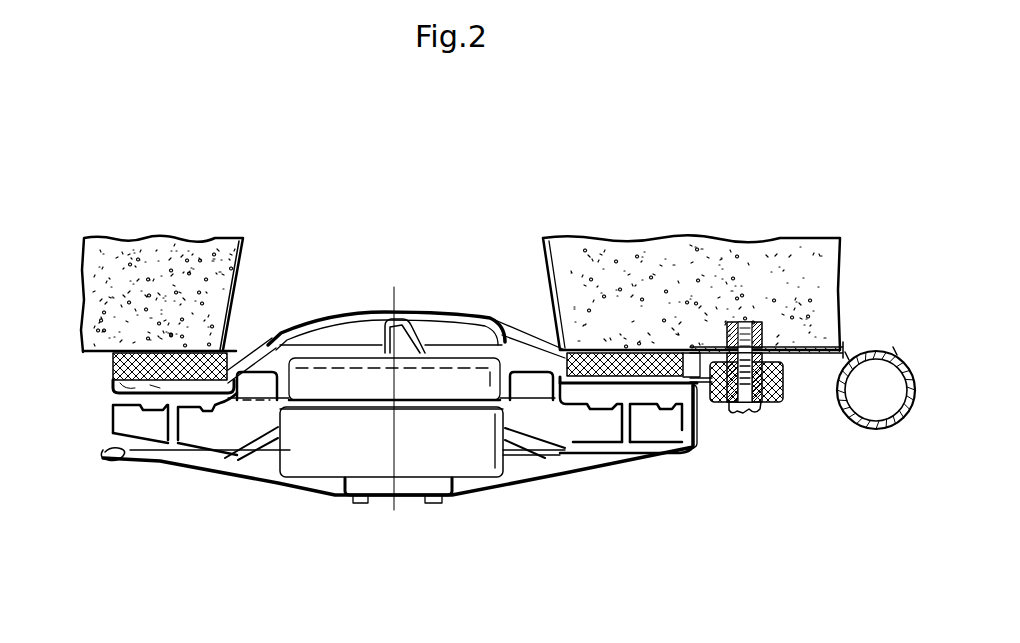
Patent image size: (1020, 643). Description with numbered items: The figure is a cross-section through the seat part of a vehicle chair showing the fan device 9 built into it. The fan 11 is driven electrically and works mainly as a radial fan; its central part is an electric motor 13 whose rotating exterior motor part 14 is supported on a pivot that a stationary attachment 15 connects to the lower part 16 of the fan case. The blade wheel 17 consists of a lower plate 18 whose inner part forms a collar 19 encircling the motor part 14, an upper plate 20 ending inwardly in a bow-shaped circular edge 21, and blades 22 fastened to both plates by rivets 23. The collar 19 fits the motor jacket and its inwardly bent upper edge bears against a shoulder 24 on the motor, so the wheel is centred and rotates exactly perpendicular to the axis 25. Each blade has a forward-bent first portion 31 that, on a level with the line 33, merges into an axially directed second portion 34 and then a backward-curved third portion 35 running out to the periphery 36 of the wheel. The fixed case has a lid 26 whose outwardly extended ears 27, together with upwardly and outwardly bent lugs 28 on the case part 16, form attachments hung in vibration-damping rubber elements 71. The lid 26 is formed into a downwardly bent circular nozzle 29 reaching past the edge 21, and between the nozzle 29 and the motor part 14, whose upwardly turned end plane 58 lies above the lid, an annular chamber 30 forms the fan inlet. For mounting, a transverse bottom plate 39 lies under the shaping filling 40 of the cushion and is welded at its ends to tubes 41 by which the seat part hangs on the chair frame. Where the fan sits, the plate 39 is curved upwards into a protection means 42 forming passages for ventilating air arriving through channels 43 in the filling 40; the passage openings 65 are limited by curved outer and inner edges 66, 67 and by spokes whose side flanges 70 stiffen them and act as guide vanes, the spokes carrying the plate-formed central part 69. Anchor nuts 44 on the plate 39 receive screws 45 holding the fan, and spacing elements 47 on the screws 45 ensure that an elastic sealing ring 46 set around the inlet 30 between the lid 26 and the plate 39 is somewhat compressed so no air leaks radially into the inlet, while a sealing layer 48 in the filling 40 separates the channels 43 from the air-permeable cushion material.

The fan device 9 is at (334, 517).
The fan 11 is at (467, 500).
The electric motor 13 is at (425, 462).
The motor part 14 is at (255, 480).
The stationary attachment 15 is at (384, 480).
The lower part of the fan case 16 is at (295, 482).
The blade wheel 17 is at (108, 455).
The lower plate 18 is at (155, 460).
The collar 19 is at (218, 462).
The upper plate 20 is at (135, 455).
The circular edge 21 is at (178, 468).
The blades 22 is at (610, 430).
The rivets 23 is at (700, 435).
The shoulder 24 is at (465, 400).
The axis 25 is at (398, 318).
The lid 26 is at (638, 350).
The ears 27 is at (693, 350).
The lugs 28 is at (702, 440).
The nozzle 29 is at (243, 377).
The annular chamber 30 is at (268, 350).
The first blade portion 31 is at (523, 383).
The line 33 is at (545, 420).
The second blade portion 34 is at (593, 433).
The third blade portion 35 is at (633, 418).
The periphery 36 is at (118, 440).
The bottom plate 39 is at (118, 353).
The filling 40 is at (750, 265).
The tubes 41 is at (880, 430).
The protection means 42 is at (369, 305).
The channels 43 is at (308, 290).
The anchor nuts 44 is at (757, 322).
The screws 45 is at (762, 414).
The elastic sealing ring 46 is at (592, 350).
The spacing elements 47 is at (786, 360).
The sealing layer 48 is at (243, 238).
The end plane 58 is at (443, 395).
The passage openings 65 is at (271, 363).
The outer edges 66 is at (525, 350).
The inner edges 67 is at (492, 345).
The central part 69 is at (340, 314).
The side flange 70 is at (505, 340).
The rubber elements 71 is at (779, 358).